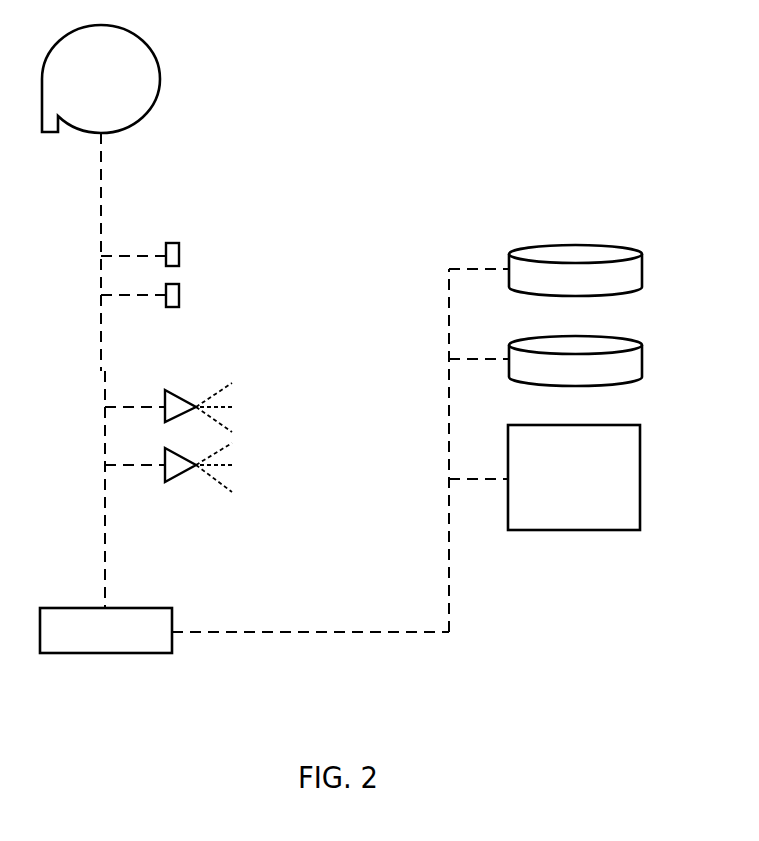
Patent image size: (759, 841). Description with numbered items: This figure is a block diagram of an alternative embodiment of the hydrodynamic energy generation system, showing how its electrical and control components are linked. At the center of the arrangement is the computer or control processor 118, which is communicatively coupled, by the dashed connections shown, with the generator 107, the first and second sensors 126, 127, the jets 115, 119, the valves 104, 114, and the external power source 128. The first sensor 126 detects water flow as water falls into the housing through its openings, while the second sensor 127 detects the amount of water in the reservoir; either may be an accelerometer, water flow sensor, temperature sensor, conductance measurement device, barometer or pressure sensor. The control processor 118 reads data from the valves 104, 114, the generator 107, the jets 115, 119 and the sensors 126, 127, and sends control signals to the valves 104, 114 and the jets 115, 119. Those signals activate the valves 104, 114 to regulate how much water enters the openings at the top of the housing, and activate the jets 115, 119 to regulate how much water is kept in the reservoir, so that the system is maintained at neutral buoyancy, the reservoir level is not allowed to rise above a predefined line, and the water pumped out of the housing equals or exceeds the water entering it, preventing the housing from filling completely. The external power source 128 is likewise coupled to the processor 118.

The generator 107 is at (142, 79).
The first sensor 126 is at (184, 237).
The second sensor 127 is at (184, 277).
The jet 115 is at (220, 407).
The jet 119 is at (220, 467).
The valve 104 is at (594, 270).
The valve 114 is at (594, 360).
The external power source 128 is at (544, 518).
The computer or control processor 118 is at (106, 673).